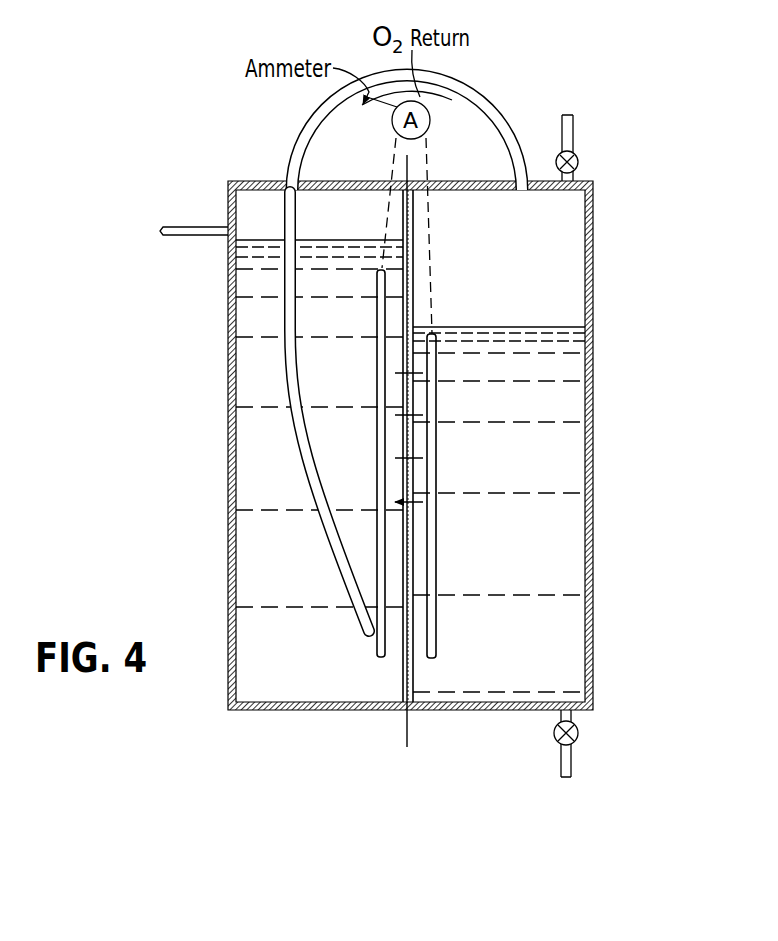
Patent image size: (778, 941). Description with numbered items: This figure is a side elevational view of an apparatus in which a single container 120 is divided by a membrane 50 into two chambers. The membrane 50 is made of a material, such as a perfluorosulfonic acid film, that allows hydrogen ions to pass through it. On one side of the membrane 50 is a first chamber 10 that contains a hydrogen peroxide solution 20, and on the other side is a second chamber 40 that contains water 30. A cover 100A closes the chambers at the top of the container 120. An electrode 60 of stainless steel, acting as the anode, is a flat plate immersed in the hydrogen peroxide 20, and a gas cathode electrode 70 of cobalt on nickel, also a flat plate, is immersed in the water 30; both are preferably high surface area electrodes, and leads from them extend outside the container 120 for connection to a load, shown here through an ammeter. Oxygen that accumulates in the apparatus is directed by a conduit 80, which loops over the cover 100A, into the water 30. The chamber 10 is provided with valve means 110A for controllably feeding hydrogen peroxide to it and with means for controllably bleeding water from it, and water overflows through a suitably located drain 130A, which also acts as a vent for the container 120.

The first chamber 10 is at (565, 268).
The hydrogen peroxide solution 20 is at (566, 323).
The water 30 is at (275, 240).
The second chamber 40 is at (250, 380).
The membrane 50 is at (413, 618).
The electrode 60 is at (436, 540).
The gas cathode electrode 70 is at (378, 488).
The conduit 80 is at (492, 100).
The cover 100A is at (270, 181).
The means for controllably feeding hydrogen peroxide 110A is at (572, 135).
The container 120 is at (593, 237).
The drain 130A is at (175, 230).